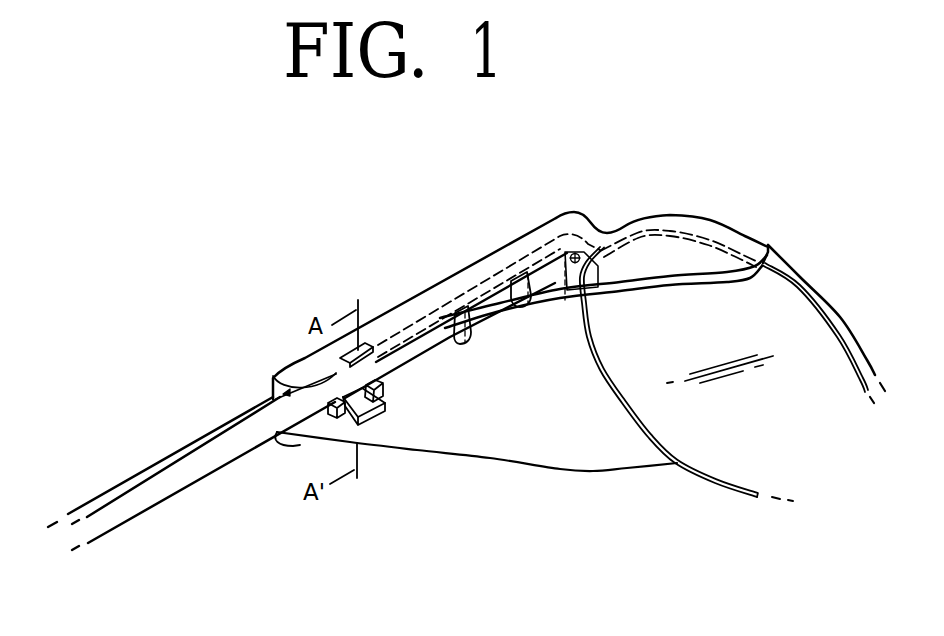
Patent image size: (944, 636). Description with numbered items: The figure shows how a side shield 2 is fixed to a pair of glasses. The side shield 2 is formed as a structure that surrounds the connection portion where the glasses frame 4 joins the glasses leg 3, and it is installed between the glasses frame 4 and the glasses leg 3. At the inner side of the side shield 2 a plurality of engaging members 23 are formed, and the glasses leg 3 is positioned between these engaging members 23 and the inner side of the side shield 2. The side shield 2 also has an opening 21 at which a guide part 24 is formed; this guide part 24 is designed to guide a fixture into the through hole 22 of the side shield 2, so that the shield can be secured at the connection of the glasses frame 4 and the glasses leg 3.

The side shield 2 is at (428, 296).
The glasses leg 3 is at (189, 478).
The glasses frame 4 is at (800, 280).
The opening 21 is at (447, 387).
The through hole 22 is at (340, 355).
The engaging members 23 is at (327, 416).
The guide part 24 is at (380, 371).